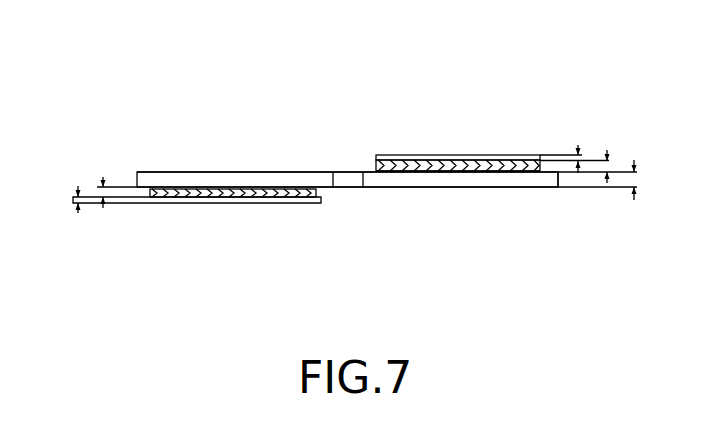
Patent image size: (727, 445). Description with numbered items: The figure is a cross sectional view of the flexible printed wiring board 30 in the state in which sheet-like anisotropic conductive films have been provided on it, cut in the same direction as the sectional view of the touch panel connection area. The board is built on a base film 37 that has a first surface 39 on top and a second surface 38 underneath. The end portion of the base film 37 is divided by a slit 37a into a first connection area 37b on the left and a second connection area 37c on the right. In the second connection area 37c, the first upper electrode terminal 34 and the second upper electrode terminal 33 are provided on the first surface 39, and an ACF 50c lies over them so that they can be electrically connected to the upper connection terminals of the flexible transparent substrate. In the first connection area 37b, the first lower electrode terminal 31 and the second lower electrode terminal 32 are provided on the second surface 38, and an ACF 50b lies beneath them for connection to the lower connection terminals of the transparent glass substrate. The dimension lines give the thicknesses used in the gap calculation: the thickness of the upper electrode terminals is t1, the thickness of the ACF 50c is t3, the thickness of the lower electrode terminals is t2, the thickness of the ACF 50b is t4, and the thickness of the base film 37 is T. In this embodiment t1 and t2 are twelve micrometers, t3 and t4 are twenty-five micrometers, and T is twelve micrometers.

The flexible printed wiring board 30 is at (590, 76).
The first lower electrode terminal 31 is at (178, 204).
The second lower electrode terminal 32 is at (305, 204).
The second upper electrode terminal 33 is at (401, 172).
The first upper electrode terminal 34 is at (497, 173).
The base film 37 is at (136, 183).
The slit 37a is at (343, 176).
The first connection area 37b is at (178, 171).
The second connection area 37c is at (543, 188).
The second surface 38 is at (326, 189).
The first surface 39 is at (365, 171).
The ACF 50b is at (232, 198).
The ACF 50c is at (460, 164).
The thickness of the upper electrode terminals t1 is at (607, 161).
The thickness of the lower electrode terminals t2 is at (97, 187).
The thickness of the ACF on the upper side t3 is at (580, 155).
The thickness of the ACF on the lower side t4 is at (74, 203).
The thickness of the base film T is at (635, 172).